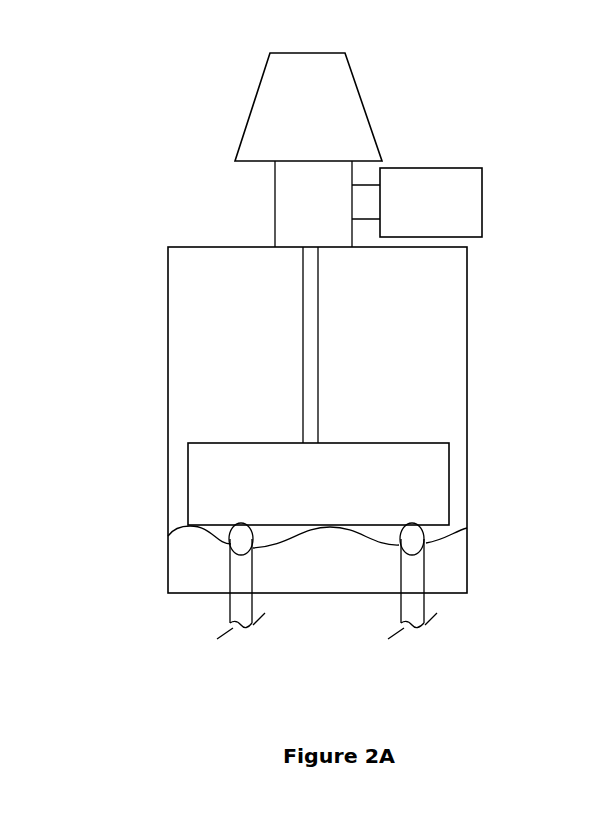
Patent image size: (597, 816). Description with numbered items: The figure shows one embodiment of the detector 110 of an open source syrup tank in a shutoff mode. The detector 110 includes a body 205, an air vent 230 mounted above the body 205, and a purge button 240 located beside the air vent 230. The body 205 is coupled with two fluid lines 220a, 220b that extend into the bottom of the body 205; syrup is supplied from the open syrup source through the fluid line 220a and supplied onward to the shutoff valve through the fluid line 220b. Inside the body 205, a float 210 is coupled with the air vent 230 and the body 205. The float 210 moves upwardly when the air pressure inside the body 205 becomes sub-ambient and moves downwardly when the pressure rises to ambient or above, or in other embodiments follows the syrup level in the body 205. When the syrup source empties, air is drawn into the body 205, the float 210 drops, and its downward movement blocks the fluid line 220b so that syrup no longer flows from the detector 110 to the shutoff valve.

The detector 110 is at (556, 121).
The body 205 is at (467, 422).
The float 210 is at (449, 500).
The fluid line 220a is at (230, 608).
The fluid line 220b is at (401, 608).
The air vent 230 is at (267, 105).
The purge button 240 is at (482, 213).